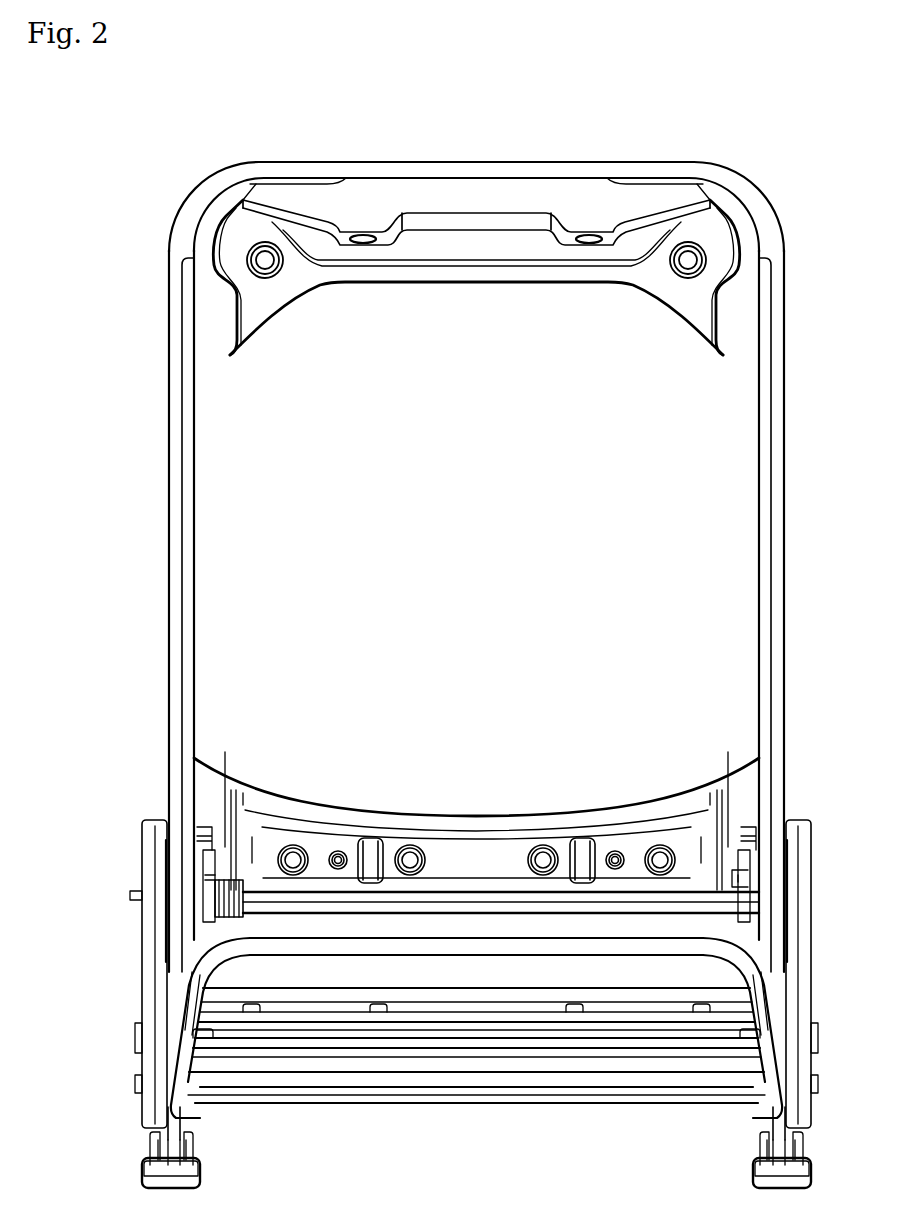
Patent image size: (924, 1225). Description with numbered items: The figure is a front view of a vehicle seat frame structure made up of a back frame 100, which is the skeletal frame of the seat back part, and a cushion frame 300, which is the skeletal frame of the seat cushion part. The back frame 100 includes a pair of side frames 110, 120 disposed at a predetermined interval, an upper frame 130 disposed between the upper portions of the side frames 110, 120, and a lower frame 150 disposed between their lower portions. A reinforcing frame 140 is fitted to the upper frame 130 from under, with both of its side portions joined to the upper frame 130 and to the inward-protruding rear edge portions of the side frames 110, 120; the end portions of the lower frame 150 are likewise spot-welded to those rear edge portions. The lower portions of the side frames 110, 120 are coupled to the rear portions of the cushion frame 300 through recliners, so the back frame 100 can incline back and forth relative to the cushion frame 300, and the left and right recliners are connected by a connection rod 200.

The back frame 100 is at (165, 303).
The side frame 110 is at (168, 522).
The side frame 120 is at (785, 475).
The upper frame 130 is at (466, 160).
The reinforcing frame 140 is at (456, 285).
The lower frame 150 is at (477, 812).
The connection rod 200 is at (322, 903).
The cushion frame 300 is at (138, 963).